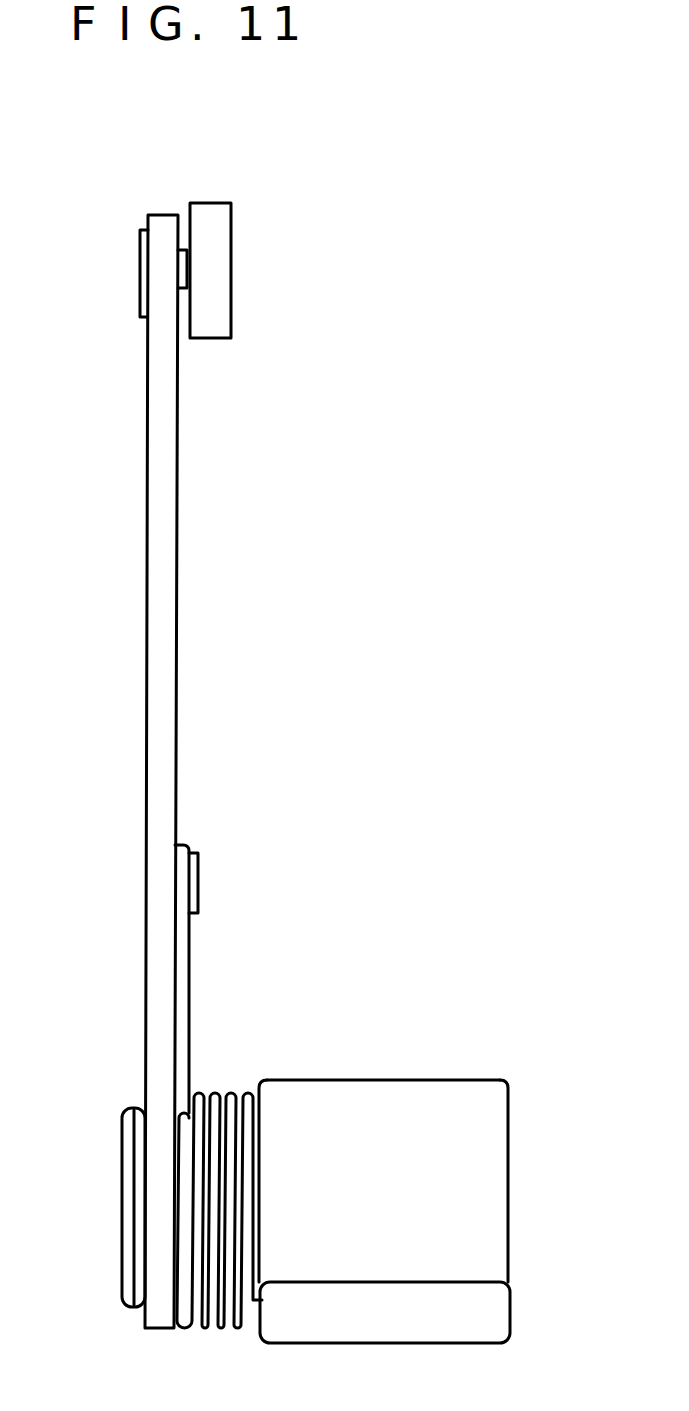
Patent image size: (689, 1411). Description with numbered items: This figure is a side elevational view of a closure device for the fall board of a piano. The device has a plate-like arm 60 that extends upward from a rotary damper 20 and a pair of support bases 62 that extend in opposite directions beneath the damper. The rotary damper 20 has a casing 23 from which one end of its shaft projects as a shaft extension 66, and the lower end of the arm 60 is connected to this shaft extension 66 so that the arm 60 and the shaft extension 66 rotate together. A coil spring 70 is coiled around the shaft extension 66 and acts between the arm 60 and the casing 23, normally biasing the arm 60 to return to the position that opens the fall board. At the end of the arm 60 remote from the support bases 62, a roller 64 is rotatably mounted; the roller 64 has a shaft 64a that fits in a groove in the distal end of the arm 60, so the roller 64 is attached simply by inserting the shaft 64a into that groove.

The rotary damper 20 is at (386, 1141).
The casing 23 is at (345, 1100).
The plate-like arm 60 is at (157, 605).
The support bases 62 is at (494, 1307).
The roller 64 is at (215, 212).
The shaft 64a is at (183, 247).
The shaft extension 66 is at (130, 1285).
The coil spring 70 is at (215, 1093).